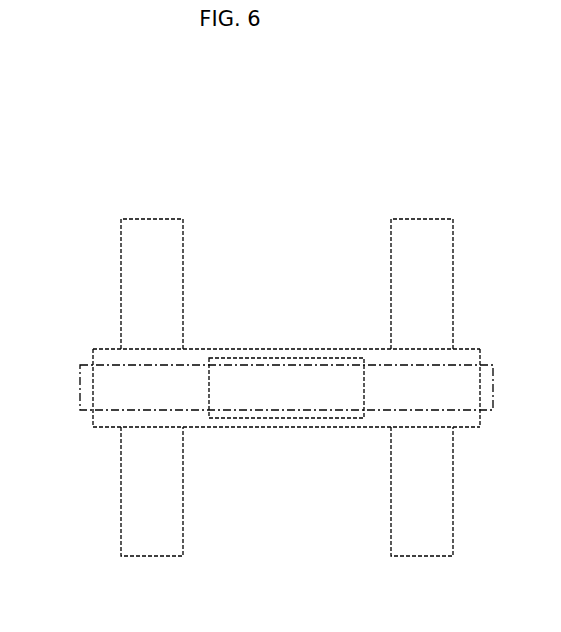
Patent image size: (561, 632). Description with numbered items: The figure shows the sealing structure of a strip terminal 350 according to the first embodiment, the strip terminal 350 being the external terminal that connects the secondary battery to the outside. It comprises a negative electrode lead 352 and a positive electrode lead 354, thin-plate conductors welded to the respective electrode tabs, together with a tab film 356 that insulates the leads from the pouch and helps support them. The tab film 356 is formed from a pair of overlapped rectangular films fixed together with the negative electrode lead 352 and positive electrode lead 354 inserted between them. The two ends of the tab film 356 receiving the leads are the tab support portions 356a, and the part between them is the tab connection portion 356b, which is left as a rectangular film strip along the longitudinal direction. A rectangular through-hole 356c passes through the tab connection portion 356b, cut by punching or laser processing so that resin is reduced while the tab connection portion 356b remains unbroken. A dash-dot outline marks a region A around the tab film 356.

The strip terminal 350 is at (305, 116).
The negative electrode lead 352 is at (423, 230).
The positive electrode lead 354 is at (153, 228).
The tab film 356 is at (295, 342).
The tab support portions 356a is at (124, 418).
The tab connection portion 356b is at (228, 427).
The through-hole 356c is at (320, 418).
The region A is at (80, 388).